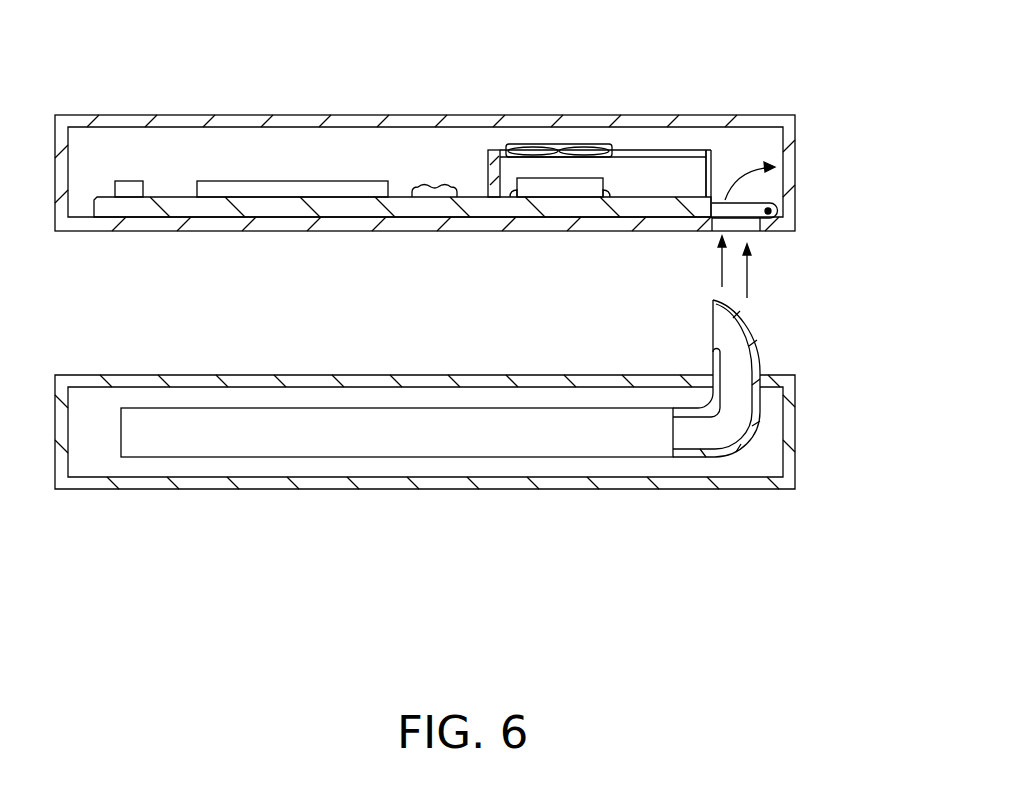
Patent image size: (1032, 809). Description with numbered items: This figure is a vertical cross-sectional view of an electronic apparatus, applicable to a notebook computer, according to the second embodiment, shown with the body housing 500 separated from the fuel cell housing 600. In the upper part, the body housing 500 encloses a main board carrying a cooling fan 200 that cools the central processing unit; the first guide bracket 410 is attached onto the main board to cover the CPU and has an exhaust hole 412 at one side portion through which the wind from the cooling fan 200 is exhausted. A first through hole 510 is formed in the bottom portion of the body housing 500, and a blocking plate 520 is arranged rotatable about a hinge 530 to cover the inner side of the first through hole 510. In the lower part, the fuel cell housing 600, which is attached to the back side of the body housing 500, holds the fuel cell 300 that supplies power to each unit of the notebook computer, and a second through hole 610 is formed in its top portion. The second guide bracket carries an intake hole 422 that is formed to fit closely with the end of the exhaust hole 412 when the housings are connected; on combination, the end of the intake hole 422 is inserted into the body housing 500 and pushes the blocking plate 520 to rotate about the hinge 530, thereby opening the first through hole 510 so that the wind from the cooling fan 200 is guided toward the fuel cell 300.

The body housing 500 is at (190, 115).
The first guide bracket 410 is at (492, 150).
The exhaust hole 412 is at (703, 172).
The cooling fan 200 is at (581, 150).
The blocking plate 520 is at (743, 209).
The hinge 530 is at (773, 212).
The first through hole 510 is at (730, 228).
The fuel cell housing 600 is at (256, 482).
The second through hole 610 is at (757, 362).
The intake hole 422 is at (718, 330).
The fuel cell 300 is at (405, 430).